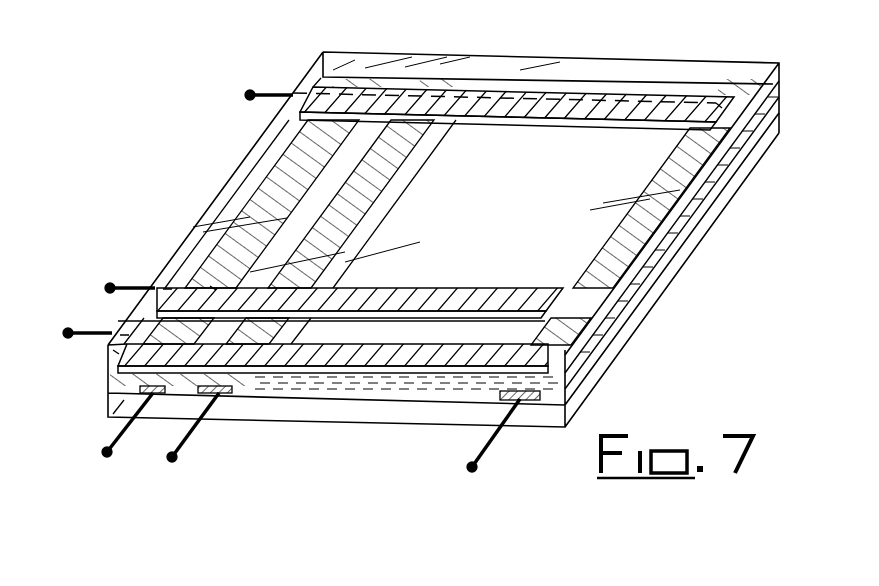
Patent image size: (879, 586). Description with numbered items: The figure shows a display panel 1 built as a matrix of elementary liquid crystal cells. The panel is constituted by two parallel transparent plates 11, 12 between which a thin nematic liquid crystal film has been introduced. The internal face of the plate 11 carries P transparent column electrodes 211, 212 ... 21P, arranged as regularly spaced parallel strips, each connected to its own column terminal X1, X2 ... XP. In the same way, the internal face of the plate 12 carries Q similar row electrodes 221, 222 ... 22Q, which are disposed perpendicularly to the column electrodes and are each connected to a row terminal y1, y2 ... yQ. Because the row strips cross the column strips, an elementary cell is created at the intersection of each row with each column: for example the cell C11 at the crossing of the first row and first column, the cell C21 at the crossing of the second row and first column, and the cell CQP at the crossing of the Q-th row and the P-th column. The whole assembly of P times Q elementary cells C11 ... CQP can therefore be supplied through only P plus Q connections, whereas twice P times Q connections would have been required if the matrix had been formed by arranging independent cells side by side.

The display panel 1 is at (780, 100).
The transparent plate 11 is at (781, 126).
The transparent plate 12 is at (779, 62).
The column electrode 211 is at (295, 164).
The column electrode 212 is at (380, 197).
The column electrode 21P is at (628, 224).
The row electrode 221 is at (383, 364).
The row electrode 222 is at (428, 288).
The row electrode 22Q is at (586, 113).
The column terminal X1 is at (104, 454).
The column terminal X2 is at (176, 457).
The column terminal XP is at (476, 465).
The row terminal y1 is at (68, 328).
The row terminal y2 is at (110, 283).
The row terminal yQ is at (250, 90).
The elementary cell C11 is at (115, 352).
The elementary cell C21 is at (213, 288).
The elementary cell CQP is at (720, 107).